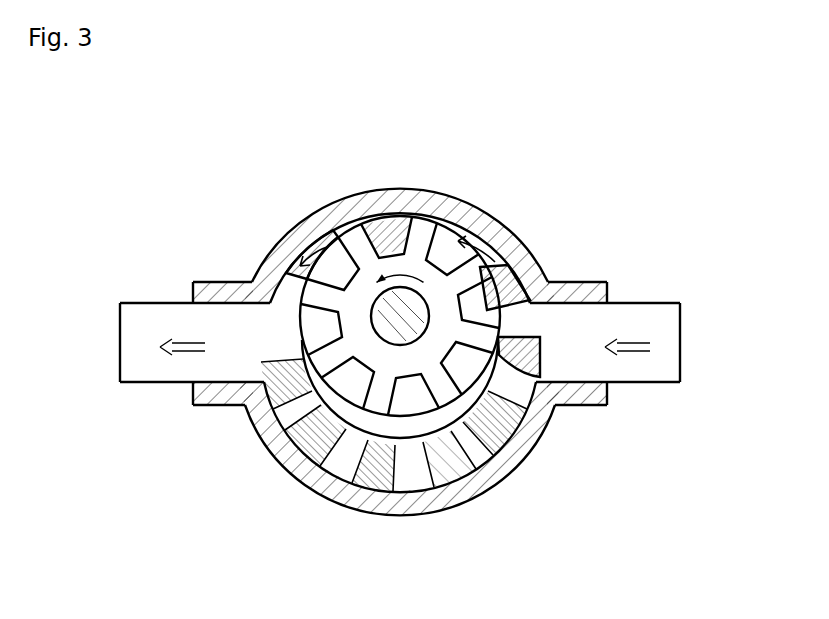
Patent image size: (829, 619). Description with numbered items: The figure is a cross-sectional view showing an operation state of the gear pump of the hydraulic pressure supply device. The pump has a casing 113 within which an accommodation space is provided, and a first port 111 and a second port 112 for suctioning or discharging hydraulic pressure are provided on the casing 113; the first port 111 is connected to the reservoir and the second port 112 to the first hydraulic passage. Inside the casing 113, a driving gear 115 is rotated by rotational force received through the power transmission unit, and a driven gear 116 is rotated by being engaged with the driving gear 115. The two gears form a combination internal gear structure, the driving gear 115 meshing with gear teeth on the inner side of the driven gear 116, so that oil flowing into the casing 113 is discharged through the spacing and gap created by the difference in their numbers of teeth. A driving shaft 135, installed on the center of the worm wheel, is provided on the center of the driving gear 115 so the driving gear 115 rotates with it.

The first port 111 is at (680, 341).
The second port 112 is at (122, 341).
The casing 113 is at (410, 208).
The driving gear 115 is at (457, 352).
The driven gear 116 is at (303, 442).
The driving shaft 135 is at (404, 346).